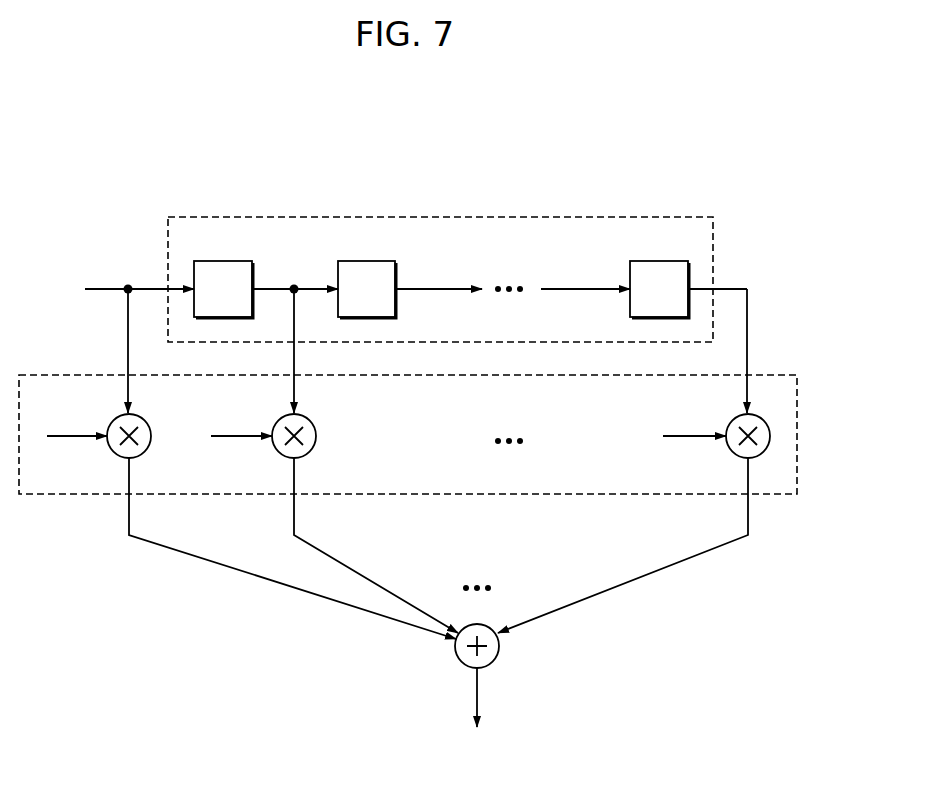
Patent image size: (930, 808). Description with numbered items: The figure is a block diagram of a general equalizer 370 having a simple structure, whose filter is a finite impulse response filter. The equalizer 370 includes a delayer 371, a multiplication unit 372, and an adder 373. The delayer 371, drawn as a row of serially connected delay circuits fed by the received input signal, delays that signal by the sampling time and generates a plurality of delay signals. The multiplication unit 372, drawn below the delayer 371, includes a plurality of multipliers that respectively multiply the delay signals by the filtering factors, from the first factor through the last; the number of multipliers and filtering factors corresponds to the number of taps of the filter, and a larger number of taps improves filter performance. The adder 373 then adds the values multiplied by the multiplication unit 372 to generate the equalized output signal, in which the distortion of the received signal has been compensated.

The equalizer 370 is at (722, 183).
The delayer 371 is at (440, 215).
The multiplication unit 372 is at (775, 374).
The adder 373 is at (497, 657).